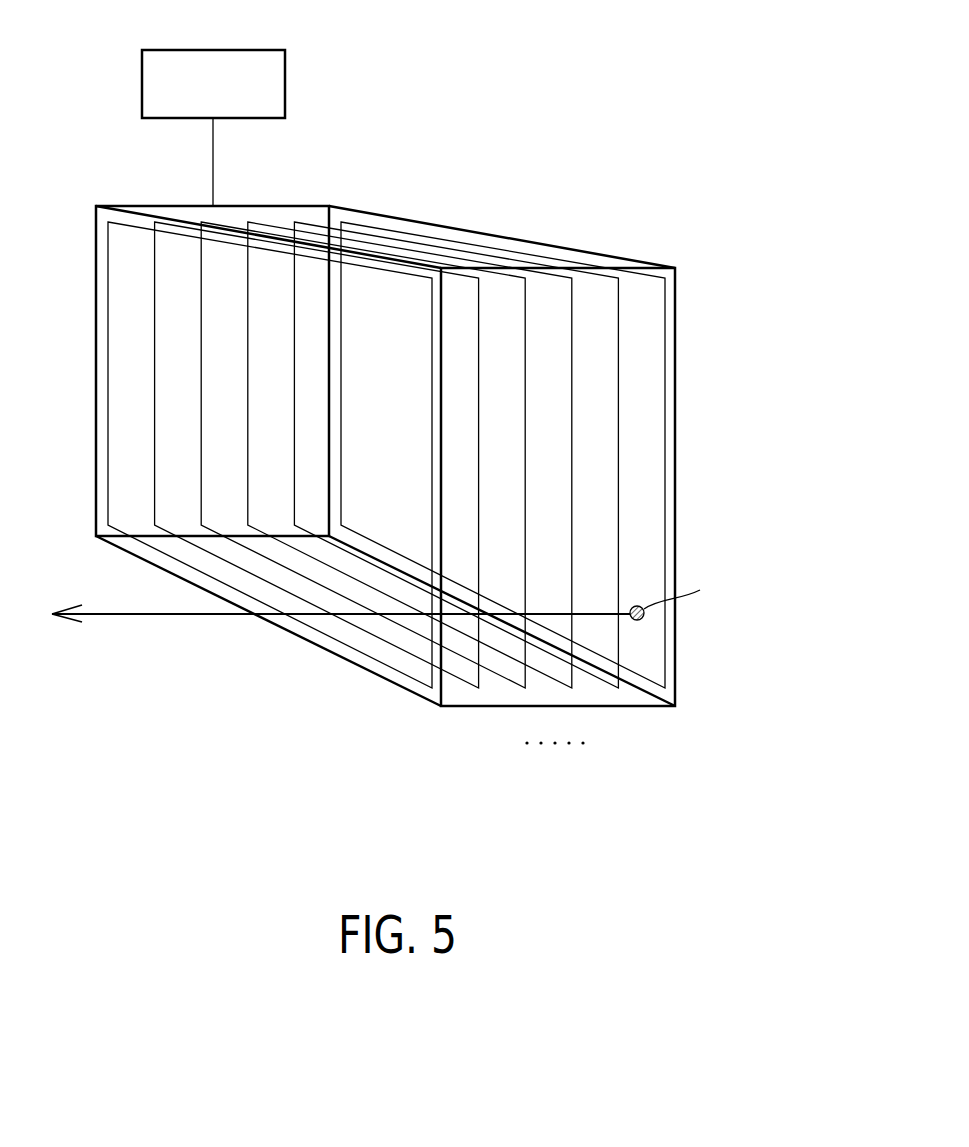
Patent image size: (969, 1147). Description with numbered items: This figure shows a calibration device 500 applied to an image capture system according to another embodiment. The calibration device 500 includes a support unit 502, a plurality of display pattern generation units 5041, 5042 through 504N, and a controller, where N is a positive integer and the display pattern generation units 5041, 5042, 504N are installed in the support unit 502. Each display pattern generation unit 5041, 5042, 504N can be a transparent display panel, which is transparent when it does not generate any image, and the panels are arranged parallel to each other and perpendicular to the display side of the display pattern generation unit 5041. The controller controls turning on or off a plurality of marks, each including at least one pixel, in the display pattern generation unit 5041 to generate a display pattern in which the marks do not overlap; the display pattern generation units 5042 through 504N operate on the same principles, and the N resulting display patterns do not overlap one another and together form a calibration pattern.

The calibration device 500 is at (662, 65).
The support unit 502 is at (527, 240).
The display pattern generation unit 5041 is at (405, 673).
The display pattern generation unit 5042 is at (463, 683).
The display pattern generation unit 504N is at (662, 688).